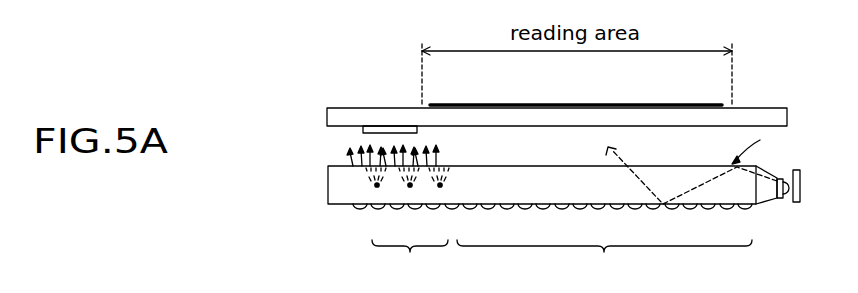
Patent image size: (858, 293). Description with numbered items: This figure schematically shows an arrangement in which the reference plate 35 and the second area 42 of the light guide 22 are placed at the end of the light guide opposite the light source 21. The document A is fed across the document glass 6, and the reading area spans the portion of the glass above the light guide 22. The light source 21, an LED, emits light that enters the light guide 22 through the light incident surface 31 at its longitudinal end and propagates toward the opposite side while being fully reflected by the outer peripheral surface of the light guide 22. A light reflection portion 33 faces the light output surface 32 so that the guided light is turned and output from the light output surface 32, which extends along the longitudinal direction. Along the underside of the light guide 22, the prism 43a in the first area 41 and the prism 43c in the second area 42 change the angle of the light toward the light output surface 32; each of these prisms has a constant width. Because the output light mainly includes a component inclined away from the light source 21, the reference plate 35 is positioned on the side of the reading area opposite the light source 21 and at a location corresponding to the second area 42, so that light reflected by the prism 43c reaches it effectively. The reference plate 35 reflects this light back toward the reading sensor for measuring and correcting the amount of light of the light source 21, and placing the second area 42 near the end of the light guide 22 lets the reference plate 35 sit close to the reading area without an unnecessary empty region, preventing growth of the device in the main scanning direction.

The document glass 6 is at (758, 107).
The document A is at (478, 103).
The reference plate 35 is at (371, 134).
The prism 43c is at (397, 208).
The prism 43a is at (521, 208).
The light reflection portion 33 is at (644, 208).
The light output surface 32 is at (665, 166).
The light guide 22 is at (763, 149).
The light incident surface 31 is at (789, 197).
The light source 21 is at (807, 190).
The second area 42 is at (410, 261).
The first area 41 is at (604, 261).